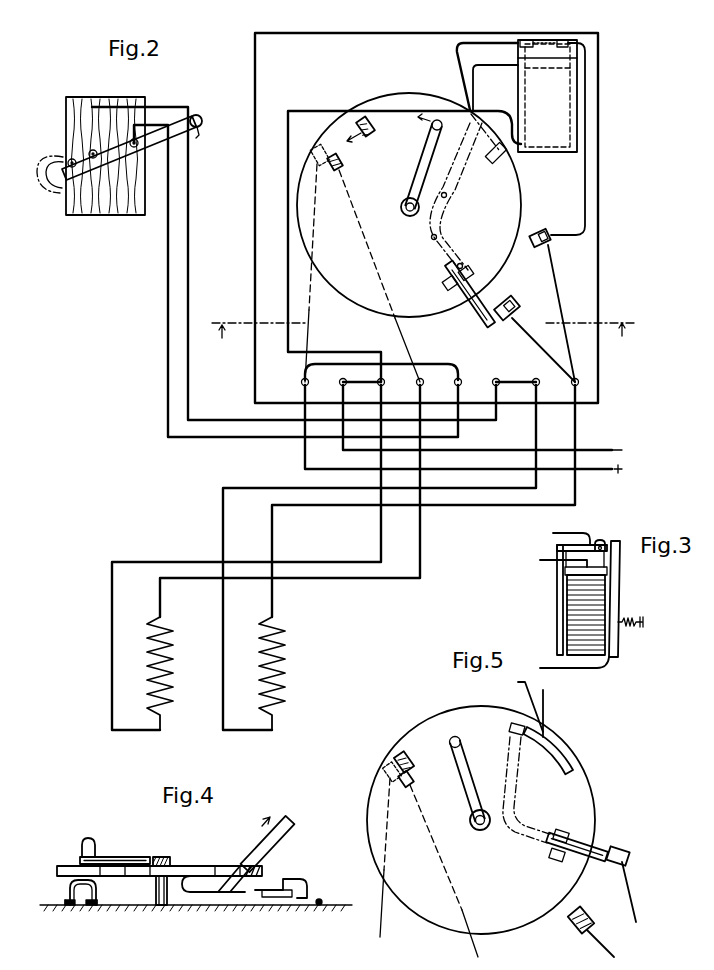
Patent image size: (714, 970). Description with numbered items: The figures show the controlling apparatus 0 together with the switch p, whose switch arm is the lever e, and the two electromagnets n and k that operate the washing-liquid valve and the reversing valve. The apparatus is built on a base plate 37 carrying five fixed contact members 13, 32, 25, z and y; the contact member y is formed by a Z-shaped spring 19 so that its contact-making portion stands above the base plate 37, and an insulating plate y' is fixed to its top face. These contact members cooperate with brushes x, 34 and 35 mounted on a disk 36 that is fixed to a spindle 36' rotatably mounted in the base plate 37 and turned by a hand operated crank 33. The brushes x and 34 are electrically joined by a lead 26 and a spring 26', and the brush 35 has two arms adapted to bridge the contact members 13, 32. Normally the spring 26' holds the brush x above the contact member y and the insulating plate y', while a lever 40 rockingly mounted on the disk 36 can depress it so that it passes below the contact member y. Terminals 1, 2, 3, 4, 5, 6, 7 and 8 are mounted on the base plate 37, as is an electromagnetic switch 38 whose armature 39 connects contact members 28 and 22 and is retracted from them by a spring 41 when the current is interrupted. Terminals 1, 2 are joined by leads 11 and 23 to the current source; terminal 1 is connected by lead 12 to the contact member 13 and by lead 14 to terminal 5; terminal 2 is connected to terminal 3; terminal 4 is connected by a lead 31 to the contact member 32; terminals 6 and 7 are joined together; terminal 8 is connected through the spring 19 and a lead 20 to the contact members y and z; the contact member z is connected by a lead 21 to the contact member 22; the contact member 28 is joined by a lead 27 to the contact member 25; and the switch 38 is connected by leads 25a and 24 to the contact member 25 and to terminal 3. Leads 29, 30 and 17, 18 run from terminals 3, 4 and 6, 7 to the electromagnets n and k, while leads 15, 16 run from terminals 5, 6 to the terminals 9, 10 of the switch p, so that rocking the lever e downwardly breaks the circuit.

In FIG. 2, the terminal 1 is at (456, 424).
In FIG. 2, the terminal 2 is at (475, 415).
In FIG. 5, the terminal 2 is at (612, 845).
In FIG. 2, the terminal 3 is at (248, 555).
In FIG. 2, the terminal 4 is at (398, 470).
In FIG. 2, the terminal 5 is at (457, 393).
In FIG. 2, the terminal 6 is at (513, 393).
In FIG. 2, the terminal 7 is at (535, 393).
In FIG. 2, the terminal 8 is at (574, 393).
In FIG. 2, the terminal of switch 9 is at (91, 153).
In FIG. 2, the terminal of switch 10 is at (138, 147).
In FIG. 2, the lead 11 is at (587, 471).
In FIG. 2, the lead 12 is at (312, 312).
In FIG. 5, the lead 12 is at (380, 921).
In FIG. 2, the contact member 13 is at (313, 152).
In FIG. 4, the contact member 13 is at (67, 907).
In FIG. 5, the contact member 13 is at (384, 769).
In FIG. 2, the lead 14 is at (434, 363).
In FIG. 2, the lead 15 is at (168, 250).
In FIG. 2, the lead 16 is at (188, 246).
In FIG. 2, the lead 17 is at (379, 557).
In FIG. 2, the lead 18 is at (447, 506).
In FIG. 2, the Z-shaped spring 19 is at (533, 336).
In FIG. 5, the Z-shaped spring 19 is at (607, 949).
In FIG. 2, the lead 20 is at (557, 284).
In FIG. 5, the lead 20 is at (630, 888).
In FIG. 2, the lead 21 is at (588, 179).
In FIG. 5, the lead 21 is at (633, 853).
In FIG. 2, the contact member 22 is at (566, 40).
In FIG. 3, the contact member 22 is at (601, 540).
In FIG. 2, the lead 23 is at (597, 449).
In FIG. 2, the lead 24 is at (287, 281).
In FIG. 3, the lead 24 is at (546, 662).
In FIG. 2, the contact member 25 is at (472, 127).
In FIG. 5, the contact member 25 is at (559, 746).
In FIG. 2, the lead 25a is at (476, 84).
In FIG. 3, the lead 25a is at (546, 562).
In FIG. 5, the lead 25a is at (546, 701).
In FIG. 2, the lead 26 is at (456, 196).
In FIG. 5, the lead 26 is at (528, 790).
In FIG. 2, the lead 27 is at (457, 47).
In FIG. 3, the lead 27 is at (572, 529).
In FIG. 5, the lead 27 is at (522, 703).
In FIG. 2, the contact member 28 is at (525, 40).
In FIG. 3, the contact member 28 is at (600, 548).
In FIG. 2, the lead 29 is at (160, 561).
In FIG. 2, the lead 30 is at (340, 579).
In FIG. 2, the lead 31 is at (362, 232).
In FIG. 5, the lead 31 is at (472, 944).
In FIG. 2, the contact member 32 is at (341, 162).
In FIG. 4, the contact member 32 is at (93, 907).
In FIG. 5, the contact member 32 is at (410, 779).
In FIG. 2, the hand operated crank 33 is at (424, 150).
In FIG. 4, the hand operated crank 33 is at (123, 857).
In FIG. 5, the hand operated crank 33 is at (459, 755).
In FIG. 2, the brush 34 is at (502, 160).
In FIG. 5, the brush 34 is at (512, 724).
In FIG. 2, the brush 35 is at (364, 116).
In FIG. 4, the brush 35 is at (67, 886).
In FIG. 5, the brush 35 is at (401, 750).
In FIG. 2, the disk 36 is at (409, 191).
In FIG. 4, the disk 36 is at (159, 874).
In FIG. 5, the disk 36 is at (481, 814).
In FIG. 4, the spindle 36' is at (174, 848).
In FIG. 2, the base plate 37 is at (599, 261).
In FIG. 4, the base plate 37 is at (321, 898).
In FIG. 2, the electromagnetic switch 38 is at (568, 98).
In FIG. 3, the electromagnetic switch 38 is at (602, 607).
In FIG. 3, the armature 39 is at (620, 574).
In FIG. 2, the lever 40 is at (478, 313).
In FIG. 4, the lever 40 is at (281, 823).
In FIG. 3, the spring 41 is at (622, 630).
In FIG. 2, the switch p is at (66, 108).
In FIG. 2, the lever e is at (198, 114).
In FIG. 2, the electromagnet n is at (146, 673).
In FIG. 2, the electromagnet k is at (262, 673).
In FIG. 2, the brush x is at (484, 325).
In FIG. 4, the brush x is at (254, 893).
In FIG. 5, the brush x is at (616, 865).
In FIG. 2, the contact member y is at (507, 301).
In FIG. 4, the contact member y is at (278, 910).
In FIG. 5, the contact member y is at (582, 914).
In FIG. 4, the insulating plate y' is at (282, 876).
In FIG. 2, the contact member z is at (538, 232).
In FIG. 2, the controlling apparatus 0 is at (408, 214).
In FIG. 5, the controlling apparatus 0 is at (474, 826).
In FIG. 4, the spring 26' is at (213, 901).